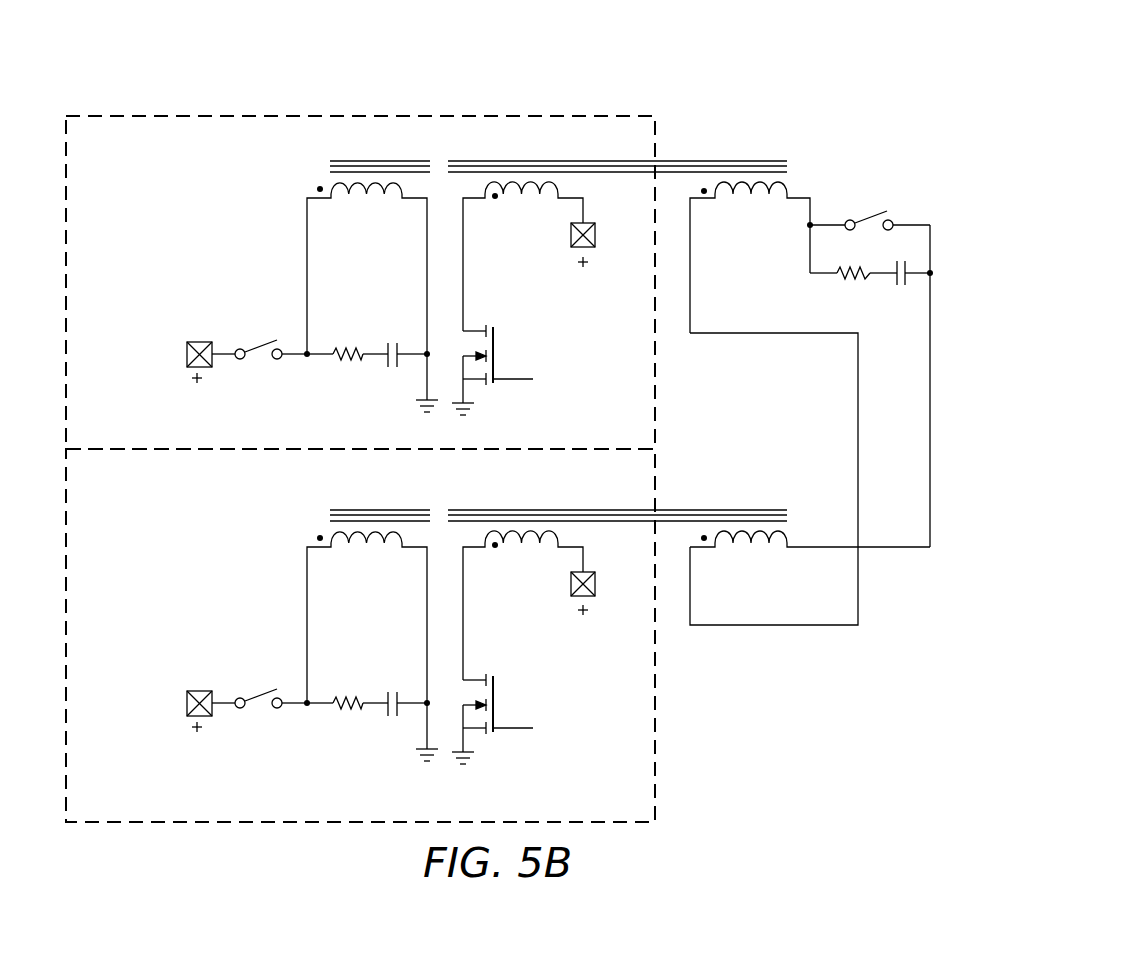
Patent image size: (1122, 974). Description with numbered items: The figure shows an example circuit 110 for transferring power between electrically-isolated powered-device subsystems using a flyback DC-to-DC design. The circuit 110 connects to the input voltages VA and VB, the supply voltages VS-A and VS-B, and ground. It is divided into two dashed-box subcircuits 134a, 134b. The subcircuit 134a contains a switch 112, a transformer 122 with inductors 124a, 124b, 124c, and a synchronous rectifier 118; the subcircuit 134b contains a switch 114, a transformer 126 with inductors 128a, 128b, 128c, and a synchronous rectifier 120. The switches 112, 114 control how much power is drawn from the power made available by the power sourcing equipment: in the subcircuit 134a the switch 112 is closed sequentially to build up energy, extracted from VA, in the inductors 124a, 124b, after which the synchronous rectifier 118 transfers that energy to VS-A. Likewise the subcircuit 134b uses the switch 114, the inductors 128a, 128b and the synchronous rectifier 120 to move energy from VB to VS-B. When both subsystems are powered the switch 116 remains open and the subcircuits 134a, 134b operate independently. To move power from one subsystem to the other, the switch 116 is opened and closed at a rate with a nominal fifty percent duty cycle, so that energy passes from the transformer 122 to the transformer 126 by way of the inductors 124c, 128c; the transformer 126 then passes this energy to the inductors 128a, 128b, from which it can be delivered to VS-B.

The circuit 110 is at (230, 61).
The switch 112 is at (262, 343).
The switch 114 is at (262, 692).
The switch 116 is at (873, 218).
The synchronous rectifier 118 is at (495, 344).
The synchronous rectifier 120 is at (495, 693).
The transformer 122 is at (746, 160).
The inductor 124a is at (378, 191).
The inductor 124b is at (513, 192).
The inductor 124c is at (742, 192).
The transformer 126 is at (746, 508).
The inductor 128a is at (378, 540).
The inductor 128b is at (513, 541).
The inductor 128c is at (742, 541).
The subcircuit 134a is at (199, 222).
The subcircuit 134b is at (199, 561).